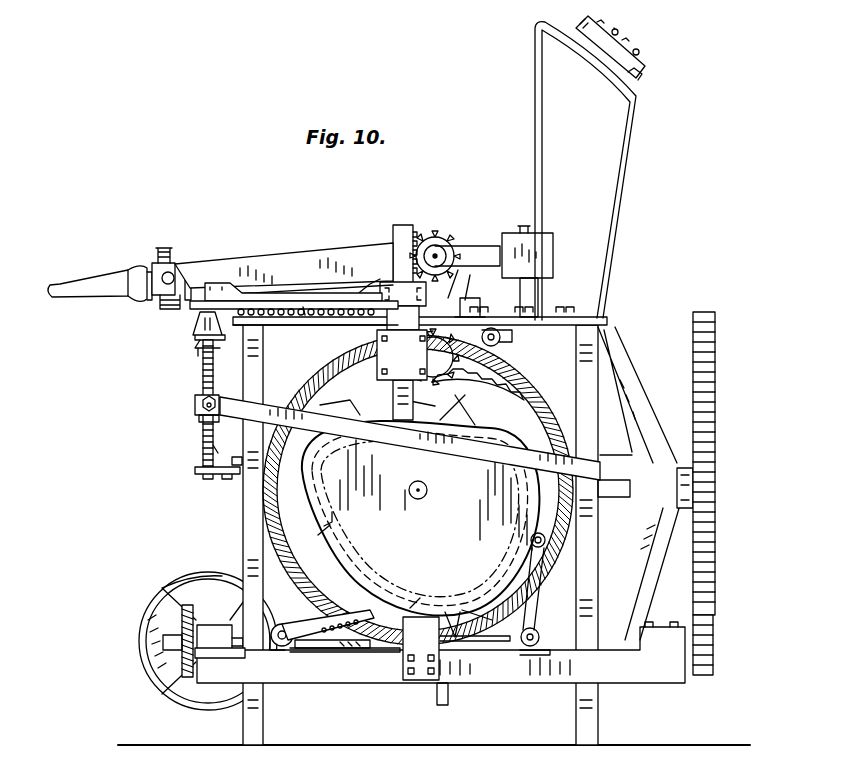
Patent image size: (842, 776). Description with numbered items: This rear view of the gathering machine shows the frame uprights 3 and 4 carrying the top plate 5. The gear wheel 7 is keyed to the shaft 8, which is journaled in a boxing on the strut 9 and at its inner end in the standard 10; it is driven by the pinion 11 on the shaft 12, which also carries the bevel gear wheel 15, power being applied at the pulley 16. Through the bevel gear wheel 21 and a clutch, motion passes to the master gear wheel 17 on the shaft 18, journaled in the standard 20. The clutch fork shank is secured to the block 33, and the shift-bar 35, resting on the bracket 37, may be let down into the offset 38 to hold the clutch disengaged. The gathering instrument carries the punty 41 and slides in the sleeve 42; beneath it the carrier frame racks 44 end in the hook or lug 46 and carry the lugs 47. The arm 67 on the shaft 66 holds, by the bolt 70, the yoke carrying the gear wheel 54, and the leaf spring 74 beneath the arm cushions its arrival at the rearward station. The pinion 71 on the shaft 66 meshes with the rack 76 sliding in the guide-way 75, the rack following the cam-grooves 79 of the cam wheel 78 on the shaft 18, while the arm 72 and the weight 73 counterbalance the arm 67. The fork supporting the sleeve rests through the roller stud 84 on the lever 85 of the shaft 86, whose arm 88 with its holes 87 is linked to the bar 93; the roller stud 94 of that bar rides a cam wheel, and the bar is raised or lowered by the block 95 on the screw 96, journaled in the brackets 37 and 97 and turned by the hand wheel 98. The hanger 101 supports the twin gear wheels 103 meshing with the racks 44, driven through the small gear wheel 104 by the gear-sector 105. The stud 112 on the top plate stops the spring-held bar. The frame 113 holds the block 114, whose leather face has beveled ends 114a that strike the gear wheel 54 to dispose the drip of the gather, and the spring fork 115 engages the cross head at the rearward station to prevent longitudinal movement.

The upright 3 is at (601, 594).
The upright 4 is at (243, 543).
The top plate 5 is at (275, 326).
The gear wheel 7 is at (715, 570).
The shaft 8 is at (621, 500).
The strut 9 is at (649, 444).
The standard 10 is at (490, 620).
The pinion 11 is at (702, 678).
The shaft 12 is at (640, 662).
The bevel gear wheel 15 is at (182, 642).
The pulley 16 is at (184, 707).
The master gear wheel 17 is at (533, 400).
The shaft 18 is at (414, 499).
The standard 20 is at (425, 661).
The bevel gear wheel 21 is at (566, 562).
The block 33 is at (538, 635).
The shift-bar 35 is at (235, 457).
The bracket 37 is at (195, 474).
The offset 38 is at (200, 452).
The punty 41 is at (59, 298).
The sleeve 42 is at (358, 279).
The racks 44 is at (320, 315).
The hook or lug 46 is at (178, 315).
The lugs 47 is at (480, 293).
The gear wheel 54 is at (171, 246).
The shaft 66 is at (436, 235).
The arm 67 is at (278, 259).
The threaded stud or bolt 70 is at (175, 274).
The pinion 71 is at (453, 242).
The arm 72 is at (460, 263).
The weight 73 is at (553, 244).
The leaf spring 74 is at (246, 297).
The guide-way 75 is at (426, 313).
The rack 76 is at (403, 228).
The cam wheel 78 is at (421, 518).
The cam-grooves 79 is at (418, 595).
The roller stud 84 is at (455, 626).
The lever 85 is at (338, 650).
The shaft 86 is at (280, 623).
The holes 87 is at (338, 614).
The arm 88 is at (300, 648).
The bar 93 is at (223, 396).
The roller stud 94 is at (434, 423).
The block 95 is at (195, 411).
The screw 96 is at (201, 361).
The bracket 97 is at (199, 337).
The hand wheel 98 is at (190, 278).
The hanger 101 is at (490, 344).
The twin gear wheels 103 is at (477, 377).
The small gear wheel 104 is at (450, 361).
The gear-sector 105 is at (535, 420).
The stud 112 is at (348, 307).
The frame 113 is at (542, 152).
The block 114 is at (620, 44).
The beveled ends 114a is at (640, 80).
The spring fork 115 is at (362, 292).